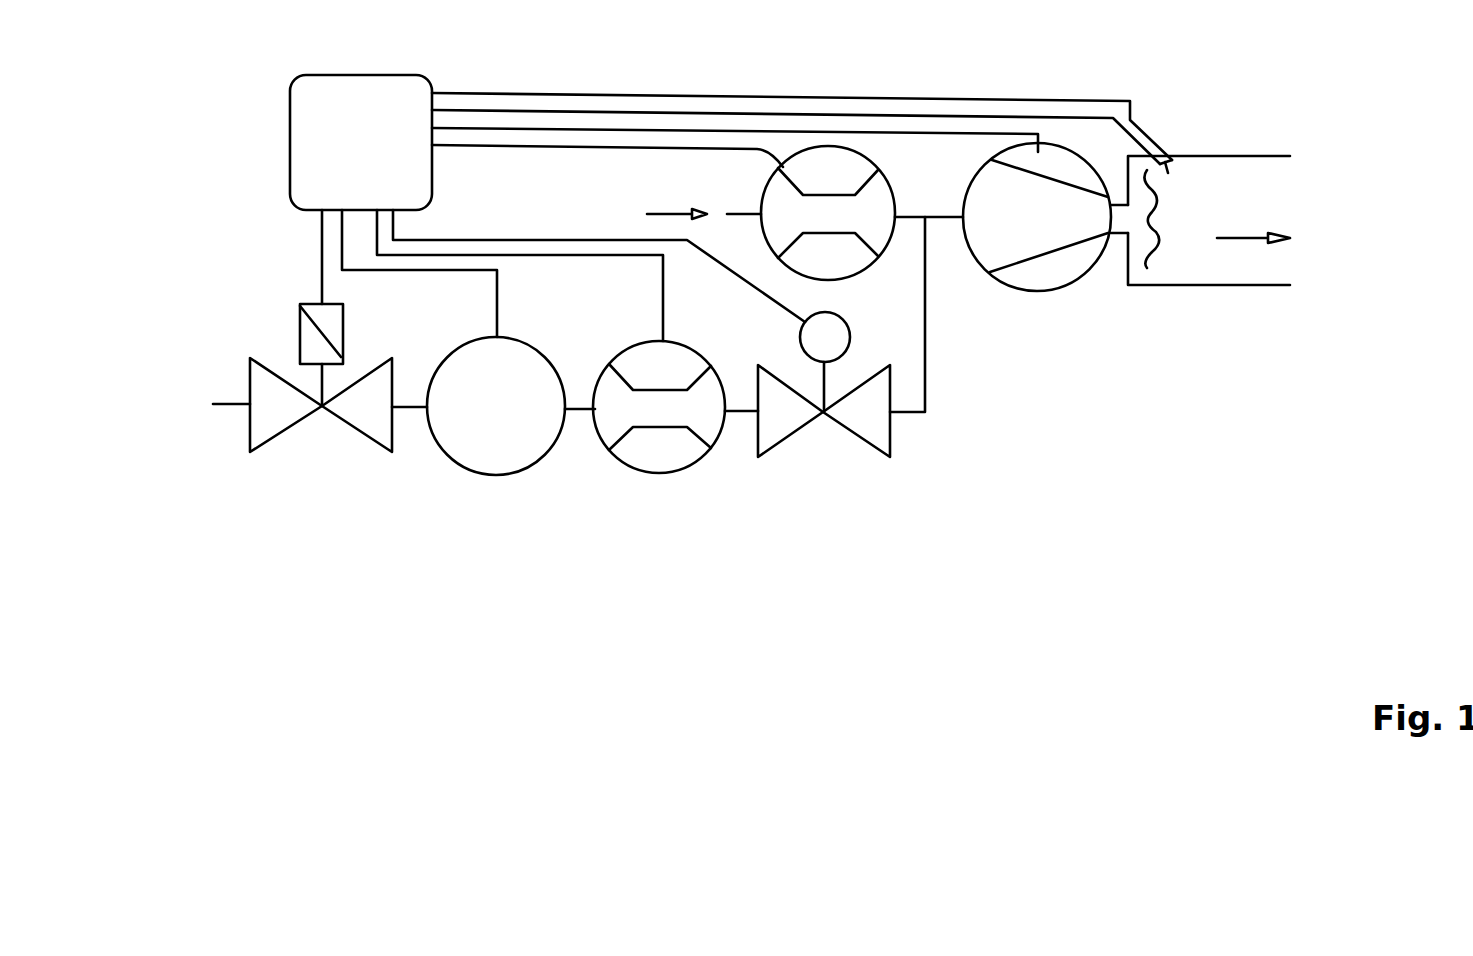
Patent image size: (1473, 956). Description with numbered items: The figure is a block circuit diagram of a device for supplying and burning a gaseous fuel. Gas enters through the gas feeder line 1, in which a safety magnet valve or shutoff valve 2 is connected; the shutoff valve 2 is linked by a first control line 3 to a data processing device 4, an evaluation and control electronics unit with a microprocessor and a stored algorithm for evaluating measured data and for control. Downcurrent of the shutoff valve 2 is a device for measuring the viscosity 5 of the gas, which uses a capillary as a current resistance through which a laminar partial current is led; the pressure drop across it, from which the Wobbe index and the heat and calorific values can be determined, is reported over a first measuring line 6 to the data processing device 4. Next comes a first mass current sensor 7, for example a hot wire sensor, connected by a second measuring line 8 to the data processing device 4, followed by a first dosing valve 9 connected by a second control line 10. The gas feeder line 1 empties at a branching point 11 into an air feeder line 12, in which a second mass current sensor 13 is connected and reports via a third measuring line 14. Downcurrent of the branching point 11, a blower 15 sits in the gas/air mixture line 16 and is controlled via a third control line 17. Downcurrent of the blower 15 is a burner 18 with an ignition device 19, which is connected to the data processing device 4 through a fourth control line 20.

The gas feeder line 1 is at (222, 404).
The shutoff valve 2 is at (274, 431).
The first control line 3 is at (322, 252).
The data processing device 4 is at (306, 131).
The device for measuring the viscosity 5 is at (459, 446).
The first measuring line 6 is at (496, 292).
The first mass current sensor 7 is at (627, 447).
The second measuring line 8 is at (663, 300).
The first dosing valve 9 is at (872, 437).
The second control line 10 is at (746, 284).
The branching point 11 is at (933, 222).
The air feeder line 12 is at (746, 214).
The second mass current sensor 13 is at (860, 253).
The third measuring line 14 is at (560, 147).
The blower 15 is at (990, 250).
The gas/air mixture line 16 is at (948, 213).
The third control line 17 is at (787, 127).
The burner 18 is at (1183, 258).
The ignition device 19 is at (1170, 157).
The fourth control line 20 is at (1040, 117).